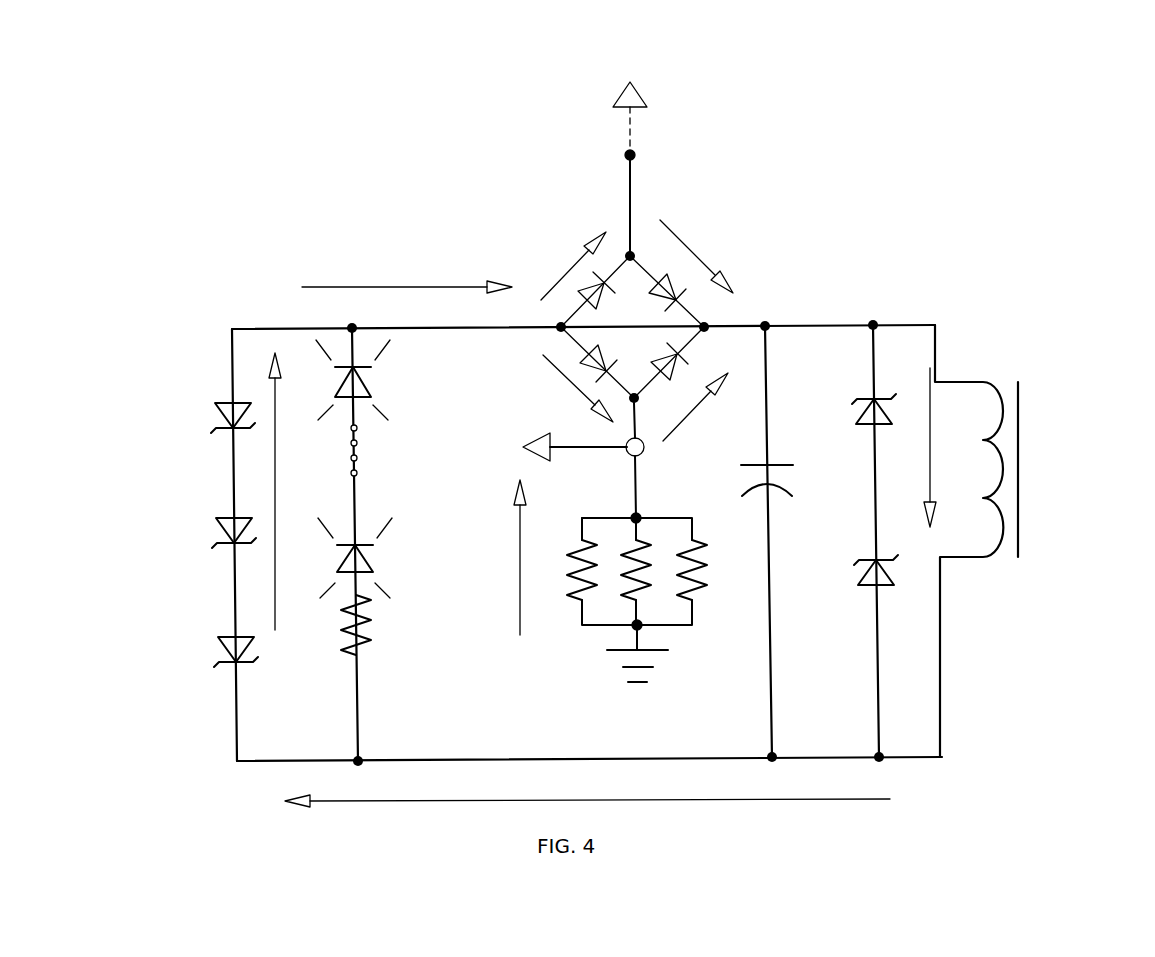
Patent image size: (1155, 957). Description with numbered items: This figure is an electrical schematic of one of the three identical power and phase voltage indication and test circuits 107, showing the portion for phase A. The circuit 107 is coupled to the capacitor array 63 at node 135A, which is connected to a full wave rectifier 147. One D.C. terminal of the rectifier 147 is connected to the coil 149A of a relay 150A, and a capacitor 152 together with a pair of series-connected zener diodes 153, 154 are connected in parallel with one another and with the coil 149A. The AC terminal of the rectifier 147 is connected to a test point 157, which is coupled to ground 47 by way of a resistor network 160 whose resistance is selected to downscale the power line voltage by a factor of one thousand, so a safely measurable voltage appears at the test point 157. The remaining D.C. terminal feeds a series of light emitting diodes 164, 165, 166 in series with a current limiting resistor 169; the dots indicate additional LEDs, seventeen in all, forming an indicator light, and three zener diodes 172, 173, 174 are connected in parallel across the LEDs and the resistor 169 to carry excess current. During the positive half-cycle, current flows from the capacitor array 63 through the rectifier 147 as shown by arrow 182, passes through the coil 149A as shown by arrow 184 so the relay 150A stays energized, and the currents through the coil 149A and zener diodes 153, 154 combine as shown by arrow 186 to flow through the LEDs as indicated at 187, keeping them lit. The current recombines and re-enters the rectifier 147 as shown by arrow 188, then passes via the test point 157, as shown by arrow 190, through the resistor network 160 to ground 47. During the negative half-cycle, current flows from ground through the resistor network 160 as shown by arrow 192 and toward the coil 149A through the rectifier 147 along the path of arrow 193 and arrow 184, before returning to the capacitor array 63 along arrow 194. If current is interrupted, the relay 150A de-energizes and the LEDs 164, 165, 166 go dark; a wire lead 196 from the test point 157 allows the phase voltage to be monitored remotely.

The power and phase voltage indication and test circuit 107 is at (299, 189).
The capacitor array 63 is at (613, 100).
The node 135A is at (640, 156).
The full wave rectifier 147 is at (652, 340).
The test point 157 is at (644, 456).
The resistor network 160 is at (721, 654).
The ground 47 is at (627, 680).
The capacitor 152 is at (795, 468).
The zener diode 153 is at (858, 414).
The zener diode 154 is at (860, 576).
The coil 149A is at (983, 382).
The relay 150A is at (1046, 445).
The light emitting diode 164 is at (370, 386).
The light emitting diode 165 is at (368, 428).
The light emitting diode 166 is at (372, 560).
The current limiting resistor 169 is at (372, 632).
The zener diode 172 is at (218, 412).
The zener diode 173 is at (220, 528).
The zener diode 174 is at (222, 646).
The arrow 182 is at (694, 253).
The arrow 184 is at (928, 481).
The arrow 186 is at (772, 803).
The arrow 187 is at (280, 474).
The arrow 188 is at (414, 283).
The arrow 190 is at (558, 378).
The arrow 192 is at (518, 580).
The arrow 193 is at (703, 392).
The arrow 194 is at (582, 264).
The wire lead 196 is at (578, 440).